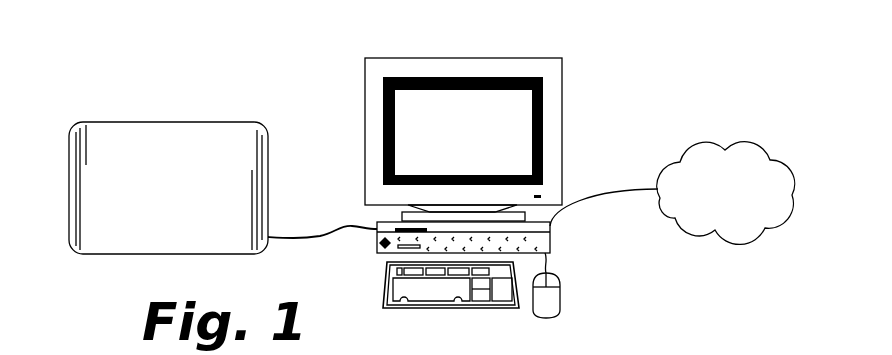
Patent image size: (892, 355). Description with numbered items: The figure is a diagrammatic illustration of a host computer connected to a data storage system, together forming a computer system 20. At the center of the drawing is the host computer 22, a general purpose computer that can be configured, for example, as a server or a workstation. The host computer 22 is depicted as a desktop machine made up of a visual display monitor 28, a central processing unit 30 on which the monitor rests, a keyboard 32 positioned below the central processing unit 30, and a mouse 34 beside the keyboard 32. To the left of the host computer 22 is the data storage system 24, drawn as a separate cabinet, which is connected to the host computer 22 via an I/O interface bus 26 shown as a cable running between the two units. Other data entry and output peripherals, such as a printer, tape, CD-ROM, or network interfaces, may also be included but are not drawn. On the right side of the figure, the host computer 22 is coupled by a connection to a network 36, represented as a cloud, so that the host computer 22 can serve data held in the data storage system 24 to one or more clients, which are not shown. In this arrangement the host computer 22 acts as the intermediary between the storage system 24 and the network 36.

The computer system 20 is at (213, 50).
The host computer 22 is at (458, 52).
The data storage system 24 is at (167, 122).
The I/O interface bus 26 is at (348, 225).
The visual display monitor 28 is at (562, 124).
The central processing unit 30 is at (548, 240).
The keyboard 32 is at (385, 285).
The mouse 34 is at (560, 283).
The network 36 is at (705, 150).